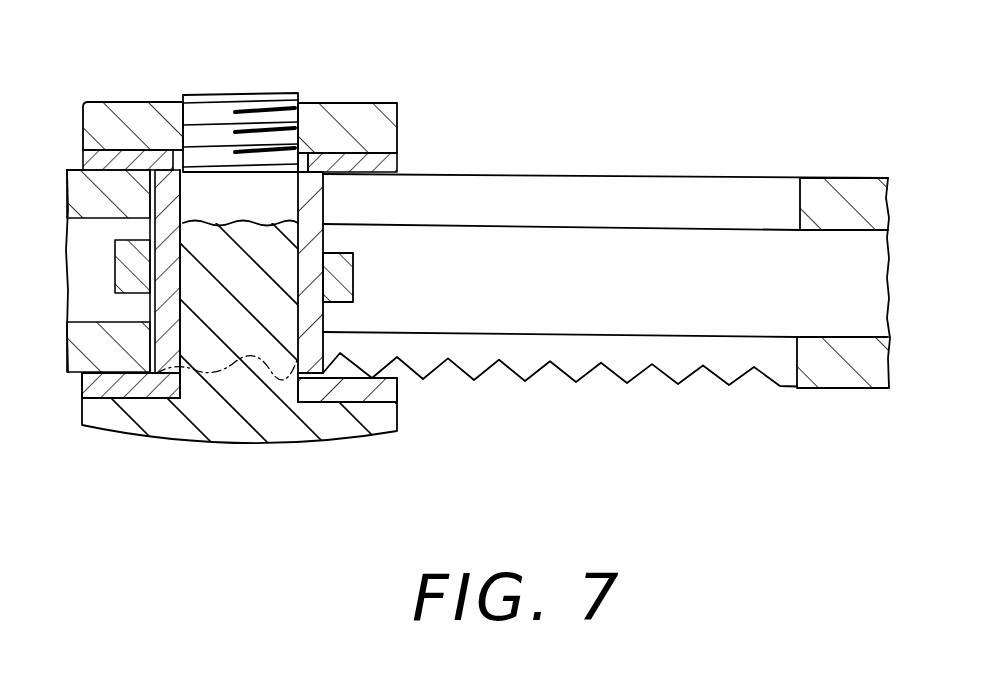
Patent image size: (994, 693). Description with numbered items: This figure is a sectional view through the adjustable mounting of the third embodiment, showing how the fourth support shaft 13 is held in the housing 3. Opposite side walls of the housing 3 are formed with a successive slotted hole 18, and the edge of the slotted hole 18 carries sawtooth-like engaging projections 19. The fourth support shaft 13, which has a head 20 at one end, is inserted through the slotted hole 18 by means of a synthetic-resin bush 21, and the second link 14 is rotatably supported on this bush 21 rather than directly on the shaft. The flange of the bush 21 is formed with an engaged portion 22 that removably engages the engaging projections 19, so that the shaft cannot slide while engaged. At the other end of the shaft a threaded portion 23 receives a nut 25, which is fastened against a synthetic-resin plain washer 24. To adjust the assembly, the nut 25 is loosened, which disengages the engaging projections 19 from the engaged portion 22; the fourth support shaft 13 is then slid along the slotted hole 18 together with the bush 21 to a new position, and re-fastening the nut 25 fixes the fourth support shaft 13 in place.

The housing 3 is at (857, 197).
The fourth support shaft 13 is at (245, 447).
The second link 14 is at (343, 283).
The slotted hole 18 is at (622, 205).
The engaging projections 19 is at (638, 380).
The head 20 is at (145, 428).
The bush 21 is at (313, 205).
The engaged portion 22 is at (347, 367).
The threaded portion 23 is at (270, 110).
The plain washer 24 is at (363, 153).
The nut 25 is at (335, 122).